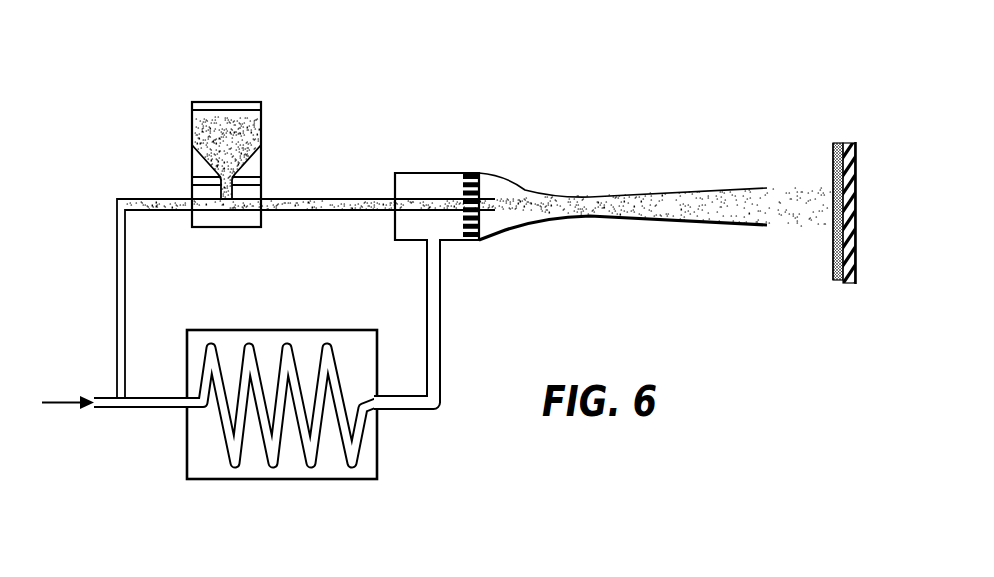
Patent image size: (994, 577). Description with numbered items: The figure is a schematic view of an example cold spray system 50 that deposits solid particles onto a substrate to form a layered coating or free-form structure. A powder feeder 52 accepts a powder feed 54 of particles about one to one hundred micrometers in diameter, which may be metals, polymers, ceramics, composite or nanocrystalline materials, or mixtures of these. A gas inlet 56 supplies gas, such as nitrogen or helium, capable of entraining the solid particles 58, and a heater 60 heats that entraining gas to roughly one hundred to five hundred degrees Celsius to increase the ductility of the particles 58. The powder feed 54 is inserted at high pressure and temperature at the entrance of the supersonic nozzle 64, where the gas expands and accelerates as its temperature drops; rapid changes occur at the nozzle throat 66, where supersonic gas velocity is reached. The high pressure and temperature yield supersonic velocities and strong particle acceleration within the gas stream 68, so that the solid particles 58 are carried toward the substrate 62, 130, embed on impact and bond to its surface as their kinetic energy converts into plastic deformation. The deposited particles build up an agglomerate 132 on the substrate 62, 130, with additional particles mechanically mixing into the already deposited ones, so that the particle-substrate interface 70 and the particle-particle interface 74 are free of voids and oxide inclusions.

The cold spray system 50 is at (257, 62).
The powder feeder 52 is at (262, 130).
The powder feed 54 is at (227, 138).
The gas inlet 56 is at (67, 399).
The solid particles 58 is at (796, 205).
The heater 60 is at (293, 480).
The substrate 62 is at (898, 237).
The substrate 130 is at (856, 270).
The supersonic nozzle 64 is at (545, 191).
The nozzle throat 66 is at (592, 218).
The gas stream 68 is at (504, 207).
The particle-substrate interface 70 is at (845, 283).
The particle-particle interface 74 is at (833, 172).
The agglomerate 132 is at (833, 262).